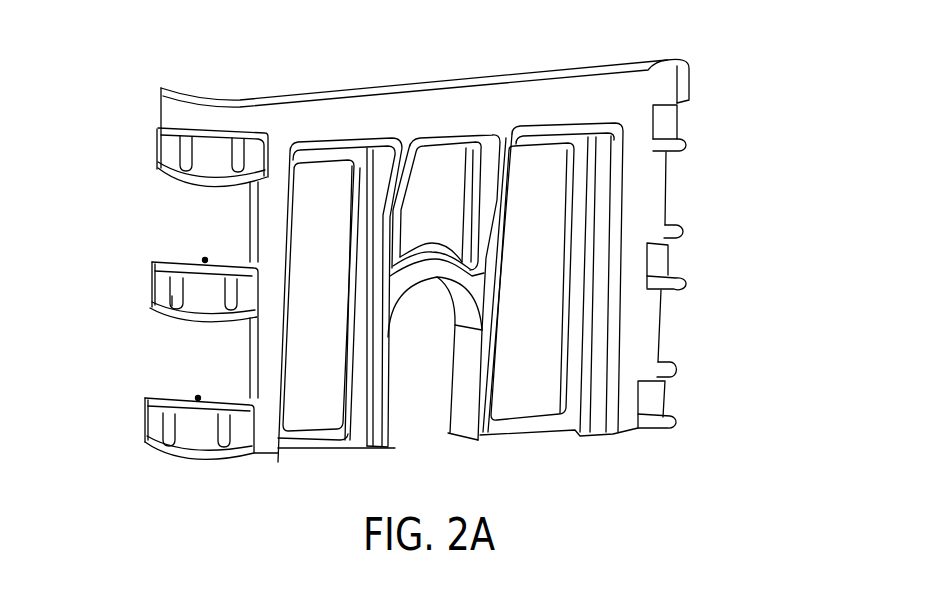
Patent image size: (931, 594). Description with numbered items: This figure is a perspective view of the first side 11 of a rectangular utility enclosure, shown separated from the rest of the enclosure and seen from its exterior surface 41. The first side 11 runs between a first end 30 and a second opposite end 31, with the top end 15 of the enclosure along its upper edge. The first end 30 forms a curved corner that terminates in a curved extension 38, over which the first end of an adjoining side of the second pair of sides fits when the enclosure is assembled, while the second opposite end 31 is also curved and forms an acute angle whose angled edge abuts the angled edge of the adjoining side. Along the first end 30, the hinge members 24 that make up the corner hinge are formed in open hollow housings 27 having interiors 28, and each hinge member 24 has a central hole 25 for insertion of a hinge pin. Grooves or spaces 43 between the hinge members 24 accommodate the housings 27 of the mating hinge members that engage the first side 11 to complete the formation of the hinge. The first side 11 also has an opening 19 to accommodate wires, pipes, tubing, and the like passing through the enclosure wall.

The first side 11 is at (469, 262).
The top end 15 is at (347, 90).
The openings 19 is at (414, 423).
The hinge members 24 is at (207, 160).
The central hole 25 is at (205, 258).
The open hollow housings 27 is at (168, 305).
The interiors 28 is at (178, 287).
The first end 30 is at (163, 268).
The second opposite end 31 is at (697, 55).
The curved extensions 38 is at (182, 93).
The exterior surface 41 is at (303, 418).
The grooves or spaces 43 is at (263, 225).